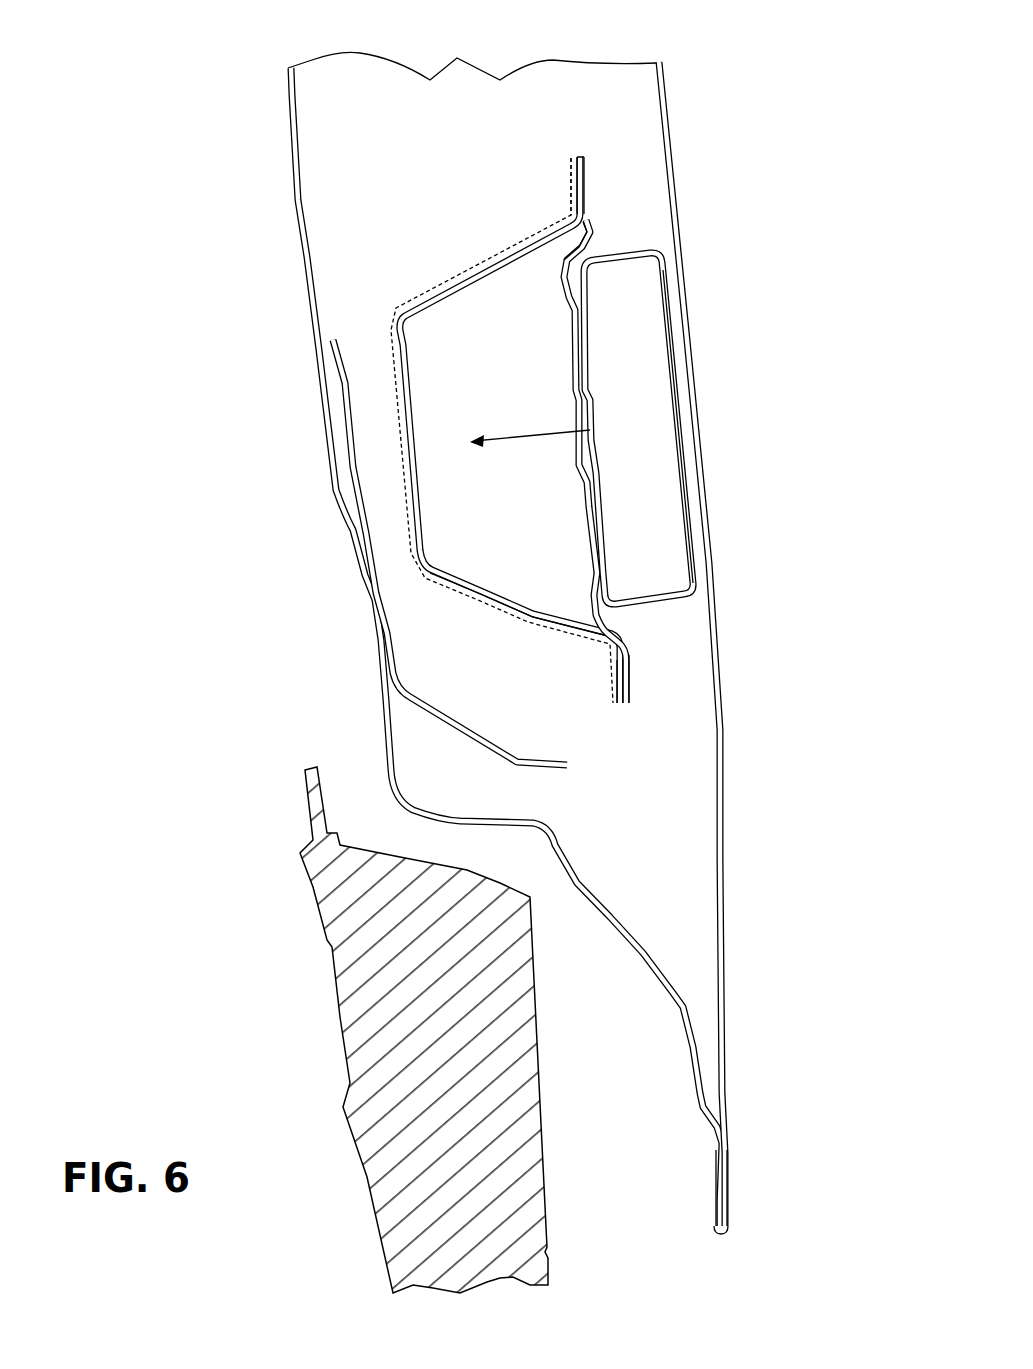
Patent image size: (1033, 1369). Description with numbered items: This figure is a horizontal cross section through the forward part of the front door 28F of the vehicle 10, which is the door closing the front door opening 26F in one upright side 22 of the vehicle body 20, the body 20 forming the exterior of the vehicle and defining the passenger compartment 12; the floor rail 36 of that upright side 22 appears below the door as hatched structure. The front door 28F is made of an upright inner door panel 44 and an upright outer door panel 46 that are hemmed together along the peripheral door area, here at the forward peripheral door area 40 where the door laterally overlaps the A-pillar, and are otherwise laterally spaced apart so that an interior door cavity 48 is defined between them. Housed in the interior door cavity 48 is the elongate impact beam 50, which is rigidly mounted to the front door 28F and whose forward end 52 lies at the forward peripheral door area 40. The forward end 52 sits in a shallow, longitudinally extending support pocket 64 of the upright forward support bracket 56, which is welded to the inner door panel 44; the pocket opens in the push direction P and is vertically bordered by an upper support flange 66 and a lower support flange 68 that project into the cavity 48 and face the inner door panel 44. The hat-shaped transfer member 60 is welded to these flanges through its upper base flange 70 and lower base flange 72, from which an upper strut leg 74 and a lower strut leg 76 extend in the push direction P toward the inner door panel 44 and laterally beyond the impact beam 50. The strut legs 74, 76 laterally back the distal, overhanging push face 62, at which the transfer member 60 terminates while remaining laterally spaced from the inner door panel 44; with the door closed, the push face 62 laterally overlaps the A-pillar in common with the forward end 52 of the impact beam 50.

The vehicle 10 is at (313, 53).
The passenger compartment 12 is at (196, 131).
The interior door cavity 48 is at (469, 131).
The front door 28F is at (662, 80).
The forward peripheral door area 40 is at (619, 154).
The front door opening 26F is at (286, 156).
The inner door panel 44 is at (298, 207).
The outer door panel 46 is at (680, 194).
The forward support bracket 56 is at (585, 174).
The upper base flange 70 is at (570, 187).
The upper support flange 66 is at (590, 212).
The impact beam 50 is at (675, 423).
The forward end 52 is at (670, 285).
The transfer member 60 is at (517, 437).
The upper strut leg 74 is at (453, 287).
The push face 62 is at (390, 363).
The push direction P is at (520, 437).
The support pocket 64 is at (632, 457).
The lower strut leg 76 is at (520, 622).
The lower base flange 72 is at (613, 677).
The lower support flange 68 is at (628, 658).
The body 20 is at (681, 1186).
The upright side 22 is at (548, 1225).
The floor rail 36 is at (548, 1262).